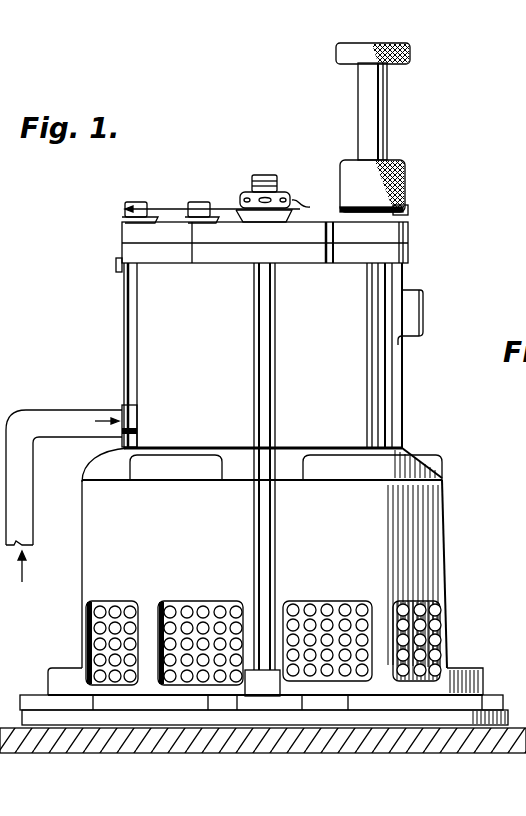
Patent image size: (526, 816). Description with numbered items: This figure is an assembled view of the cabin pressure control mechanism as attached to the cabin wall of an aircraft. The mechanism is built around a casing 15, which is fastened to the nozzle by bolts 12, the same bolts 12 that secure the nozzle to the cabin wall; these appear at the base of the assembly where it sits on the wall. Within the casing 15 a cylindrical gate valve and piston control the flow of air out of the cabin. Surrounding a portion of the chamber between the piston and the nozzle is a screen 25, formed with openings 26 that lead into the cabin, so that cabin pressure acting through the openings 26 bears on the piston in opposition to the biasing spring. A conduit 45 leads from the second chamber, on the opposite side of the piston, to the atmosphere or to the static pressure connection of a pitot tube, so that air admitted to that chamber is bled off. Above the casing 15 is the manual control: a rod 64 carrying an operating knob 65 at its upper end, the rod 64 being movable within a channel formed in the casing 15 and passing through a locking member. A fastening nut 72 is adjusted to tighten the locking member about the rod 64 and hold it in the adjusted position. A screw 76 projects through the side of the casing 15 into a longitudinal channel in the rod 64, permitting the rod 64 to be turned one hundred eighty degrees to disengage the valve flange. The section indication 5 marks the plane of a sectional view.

The operating knob 65 is at (411, 55).
The rod 64 is at (388, 142).
The fastening nut 72 is at (407, 197).
The screw 76 is at (425, 323).
The conduit 45 is at (46, 422).
The casing 15 is at (448, 552).
The openings 26 is at (422, 626).
The screen 25 is at (437, 651).
The bolts 12 is at (206, 758).
The section line 5- 5 is at (265, 178).